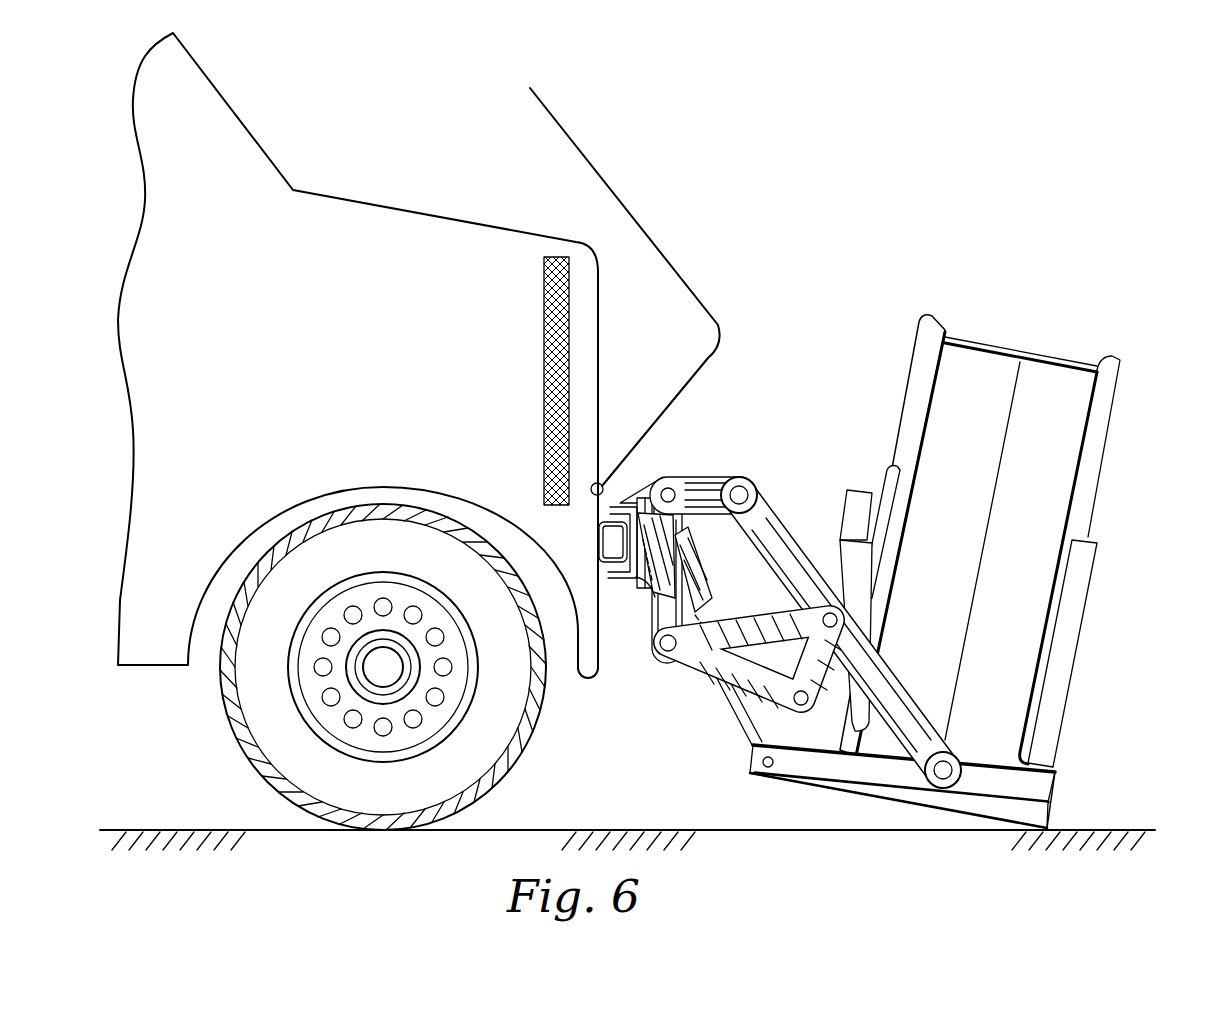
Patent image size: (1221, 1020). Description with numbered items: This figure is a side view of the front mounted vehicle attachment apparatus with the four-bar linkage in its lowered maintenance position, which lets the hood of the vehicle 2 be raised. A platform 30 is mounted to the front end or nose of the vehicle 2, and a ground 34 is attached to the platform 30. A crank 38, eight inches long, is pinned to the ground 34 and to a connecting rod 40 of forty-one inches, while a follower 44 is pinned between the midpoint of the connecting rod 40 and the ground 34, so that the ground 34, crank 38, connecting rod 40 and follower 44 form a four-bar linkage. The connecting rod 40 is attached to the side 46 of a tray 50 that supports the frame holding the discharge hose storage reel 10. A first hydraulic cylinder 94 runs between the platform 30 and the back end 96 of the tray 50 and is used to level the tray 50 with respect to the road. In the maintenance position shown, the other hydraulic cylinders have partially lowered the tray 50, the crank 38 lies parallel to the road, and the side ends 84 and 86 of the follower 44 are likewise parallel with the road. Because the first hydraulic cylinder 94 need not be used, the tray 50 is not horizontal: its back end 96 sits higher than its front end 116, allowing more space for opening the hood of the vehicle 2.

The vehicle 2 is at (363, 217).
The discharge hose storage reel 10 is at (1113, 415).
The platform 30 is at (655, 590).
The ground 34 is at (618, 600).
The crank 38 is at (704, 485).
The connecting rod 40 is at (786, 550).
The follower 44 is at (708, 677).
The side of tray 46 is at (857, 783).
The tray 50 is at (972, 805).
The first end of follower 84 is at (898, 640).
The second end of follower 86 is at (675, 663).
The first hydraulic cylinder 94 is at (745, 482).
The back end of tray 96 is at (763, 775).
The front end of tray 116 is at (1047, 822).